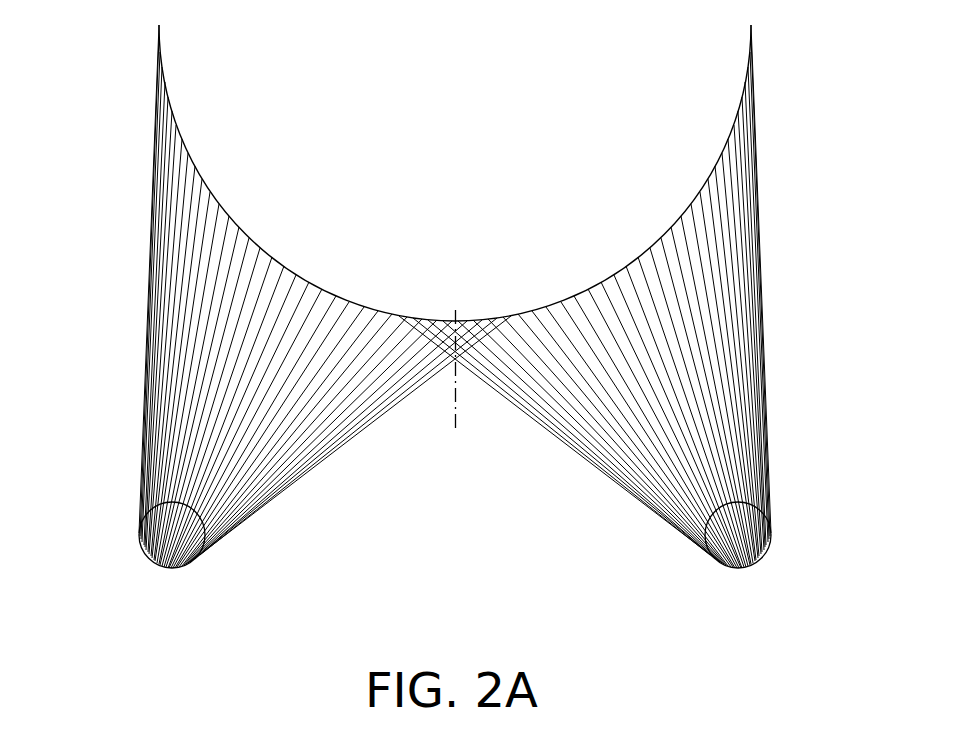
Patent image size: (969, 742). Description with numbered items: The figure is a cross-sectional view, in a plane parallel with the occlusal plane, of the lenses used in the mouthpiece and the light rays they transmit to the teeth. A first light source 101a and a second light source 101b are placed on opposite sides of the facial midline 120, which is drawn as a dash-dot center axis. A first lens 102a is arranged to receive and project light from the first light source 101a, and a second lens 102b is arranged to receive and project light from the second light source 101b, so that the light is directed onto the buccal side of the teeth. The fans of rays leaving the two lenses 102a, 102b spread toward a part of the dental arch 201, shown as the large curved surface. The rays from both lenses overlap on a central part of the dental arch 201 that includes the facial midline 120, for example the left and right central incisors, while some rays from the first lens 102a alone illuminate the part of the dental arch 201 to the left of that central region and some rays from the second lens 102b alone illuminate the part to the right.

The dental arch 201 is at (724, 152).
The first light source 101a is at (165, 565).
The second light source 101b is at (745, 565).
The first lens 102a is at (147, 530).
The second lens 102b is at (758, 528).
The facial midline 120 is at (455, 394).